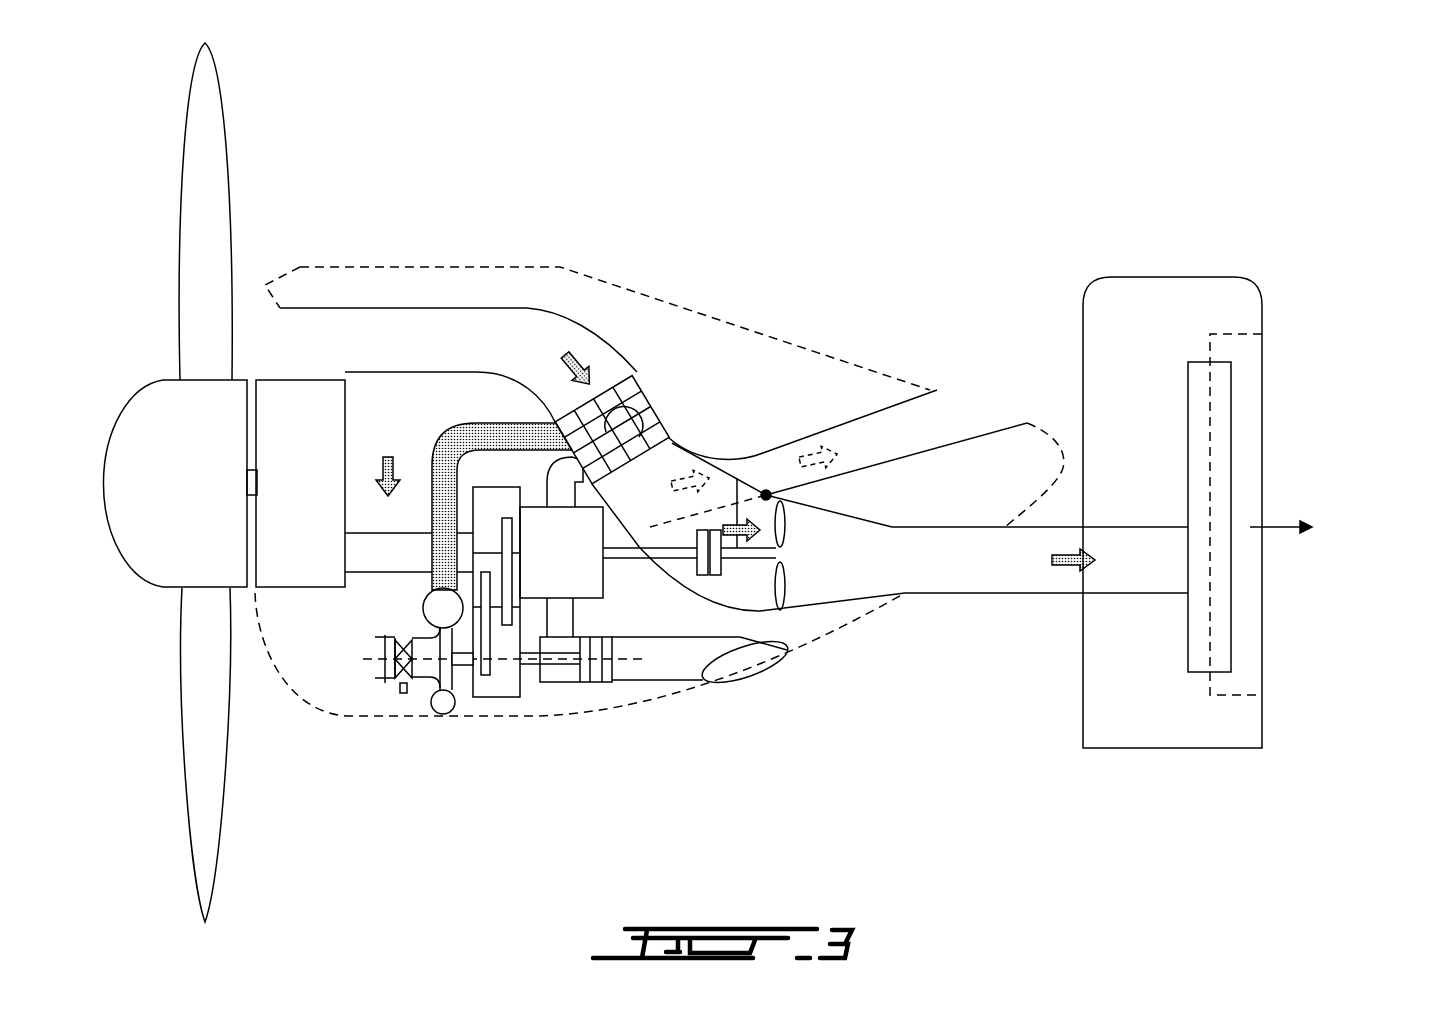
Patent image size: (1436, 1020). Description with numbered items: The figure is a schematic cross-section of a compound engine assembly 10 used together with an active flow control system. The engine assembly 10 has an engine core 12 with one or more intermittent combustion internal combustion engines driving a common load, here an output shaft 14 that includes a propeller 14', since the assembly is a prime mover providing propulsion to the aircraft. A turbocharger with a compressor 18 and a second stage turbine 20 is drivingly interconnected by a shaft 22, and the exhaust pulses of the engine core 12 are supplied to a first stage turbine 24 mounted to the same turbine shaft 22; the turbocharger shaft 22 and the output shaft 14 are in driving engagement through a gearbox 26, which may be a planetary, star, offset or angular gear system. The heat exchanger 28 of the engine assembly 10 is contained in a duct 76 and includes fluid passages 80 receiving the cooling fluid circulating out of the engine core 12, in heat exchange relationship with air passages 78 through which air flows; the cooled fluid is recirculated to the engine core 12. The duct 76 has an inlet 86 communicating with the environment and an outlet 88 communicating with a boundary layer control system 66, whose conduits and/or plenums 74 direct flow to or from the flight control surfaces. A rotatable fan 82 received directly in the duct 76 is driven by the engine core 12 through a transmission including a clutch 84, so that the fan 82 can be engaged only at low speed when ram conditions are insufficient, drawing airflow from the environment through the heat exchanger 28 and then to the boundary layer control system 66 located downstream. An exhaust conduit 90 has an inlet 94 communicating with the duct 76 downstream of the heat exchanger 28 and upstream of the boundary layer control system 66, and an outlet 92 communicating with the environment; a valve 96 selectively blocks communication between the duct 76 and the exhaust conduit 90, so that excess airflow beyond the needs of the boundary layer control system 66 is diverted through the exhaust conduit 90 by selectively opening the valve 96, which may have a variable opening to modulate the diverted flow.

The propeller 14' is at (259, 211).
The output shaft 14 is at (288, 651).
The compound engine assembly 10 is at (537, 712).
The engine core 12 is at (578, 574).
The compressor 18 is at (423, 670).
The second stage turbine 20 is at (607, 682).
The shaft 22 is at (462, 663).
The first stage turbine 24 is at (583, 683).
The gearbox 26 is at (496, 697).
The heat exchanger 28 is at (635, 388).
The boundary layer control system 66 is at (1155, 295).
The conduits and/or plenums 74 is at (1221, 580).
The duct 76 is at (872, 555).
The air passages 78 is at (658, 404).
The fluid passages 80 is at (615, 410).
The fan 82 is at (781, 600).
The clutch 84 is at (705, 577).
The inlet 86 is at (288, 330).
The outlet 88 is at (1067, 580).
The exhaust conduit 90 is at (880, 440).
The outlet 92 is at (960, 413).
The inlet 94 is at (760, 458).
The valve 96 is at (740, 560).